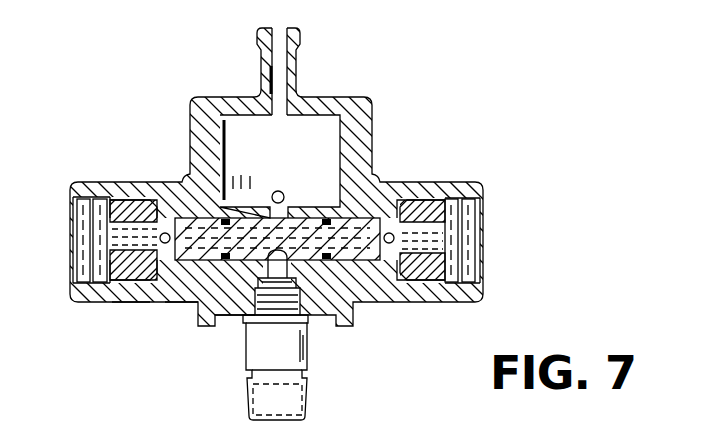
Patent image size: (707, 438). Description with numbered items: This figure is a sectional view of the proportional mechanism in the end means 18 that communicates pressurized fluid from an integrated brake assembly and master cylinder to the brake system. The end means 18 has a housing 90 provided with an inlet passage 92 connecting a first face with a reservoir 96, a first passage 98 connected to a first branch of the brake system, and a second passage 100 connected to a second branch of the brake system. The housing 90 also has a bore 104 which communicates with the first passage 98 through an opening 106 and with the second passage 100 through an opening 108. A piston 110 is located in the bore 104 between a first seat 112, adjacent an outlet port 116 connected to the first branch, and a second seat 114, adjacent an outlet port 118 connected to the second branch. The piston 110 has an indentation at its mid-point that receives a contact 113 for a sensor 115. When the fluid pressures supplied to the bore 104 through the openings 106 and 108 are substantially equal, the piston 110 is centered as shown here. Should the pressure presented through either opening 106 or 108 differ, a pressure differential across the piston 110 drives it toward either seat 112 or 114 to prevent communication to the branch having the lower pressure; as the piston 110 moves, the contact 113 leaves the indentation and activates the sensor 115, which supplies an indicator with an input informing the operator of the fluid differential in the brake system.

The end means 18 is at (353, 224).
The housing 90 is at (360, 103).
The inlet passage 92 is at (273, 193).
The reservoir 96 is at (282, 50).
The first passage 98 is at (298, 212).
The second passage 100 is at (233, 312).
The bore 104 is at (182, 303).
The opening 106 is at (163, 232).
The opening 108 is at (395, 250).
The piston 110 is at (130, 296).
The first seat 112 is at (105, 190).
The contact 113 is at (292, 284).
The second seat 114 is at (432, 202).
The sensor 115 is at (288, 366).
The outlet port 116 is at (82, 256).
The outlet port 118 is at (488, 248).